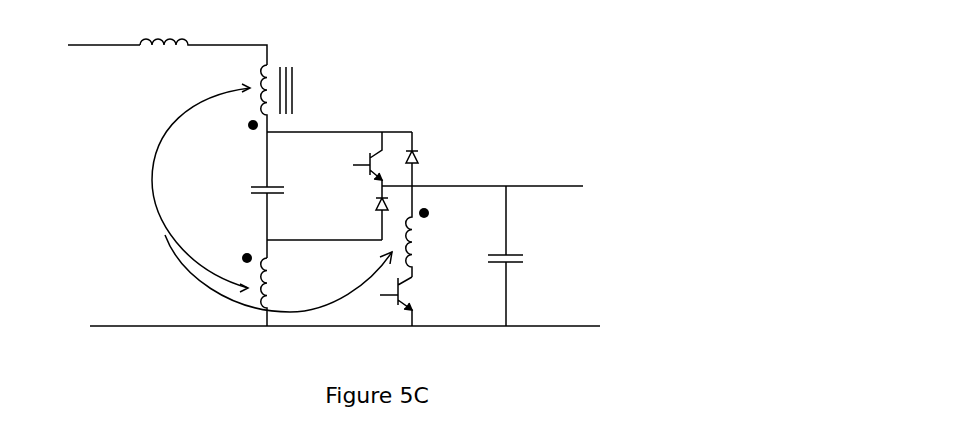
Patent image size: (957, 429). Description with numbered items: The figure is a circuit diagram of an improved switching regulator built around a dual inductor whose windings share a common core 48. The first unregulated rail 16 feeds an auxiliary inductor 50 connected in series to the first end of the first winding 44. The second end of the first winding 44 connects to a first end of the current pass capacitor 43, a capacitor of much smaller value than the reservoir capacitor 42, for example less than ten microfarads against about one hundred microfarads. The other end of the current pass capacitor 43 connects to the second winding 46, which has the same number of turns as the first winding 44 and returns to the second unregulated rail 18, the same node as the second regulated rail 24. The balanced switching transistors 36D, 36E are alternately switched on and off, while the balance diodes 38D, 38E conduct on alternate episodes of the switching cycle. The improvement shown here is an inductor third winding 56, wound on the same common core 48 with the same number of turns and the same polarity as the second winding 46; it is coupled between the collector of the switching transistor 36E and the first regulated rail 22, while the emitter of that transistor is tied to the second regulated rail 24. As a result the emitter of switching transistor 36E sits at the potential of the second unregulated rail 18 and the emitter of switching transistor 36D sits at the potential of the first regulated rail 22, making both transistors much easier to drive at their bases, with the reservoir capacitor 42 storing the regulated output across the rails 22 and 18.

The first unregulated rail 16 is at (80, 47).
The auxiliary inductor 50 is at (163, 47).
The common core 48 is at (290, 95).
The first winding 44 is at (266, 100).
The current pass capacitor 43 is at (262, 197).
The second winding 46 is at (270, 272).
The second unregulated rail 18 is at (170, 325).
The switching transistor 36D is at (367, 158).
The balance diode 38D is at (415, 155).
The balance diode 38E is at (370, 210).
The first regulated rail 22 is at (553, 187).
The third winding 56 is at (418, 250).
The switching transistor 36E is at (405, 295).
The reservoir capacitor 42 is at (497, 257).
The second regulated rail 24 is at (542, 327).